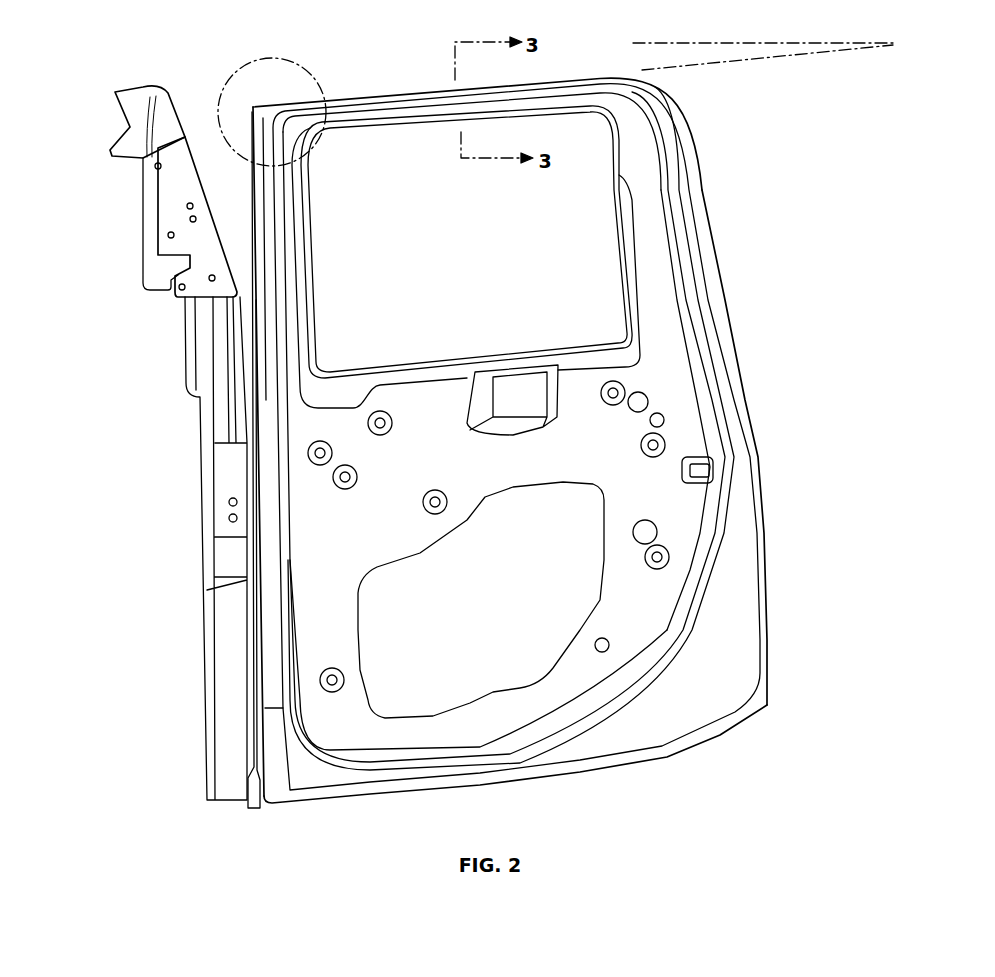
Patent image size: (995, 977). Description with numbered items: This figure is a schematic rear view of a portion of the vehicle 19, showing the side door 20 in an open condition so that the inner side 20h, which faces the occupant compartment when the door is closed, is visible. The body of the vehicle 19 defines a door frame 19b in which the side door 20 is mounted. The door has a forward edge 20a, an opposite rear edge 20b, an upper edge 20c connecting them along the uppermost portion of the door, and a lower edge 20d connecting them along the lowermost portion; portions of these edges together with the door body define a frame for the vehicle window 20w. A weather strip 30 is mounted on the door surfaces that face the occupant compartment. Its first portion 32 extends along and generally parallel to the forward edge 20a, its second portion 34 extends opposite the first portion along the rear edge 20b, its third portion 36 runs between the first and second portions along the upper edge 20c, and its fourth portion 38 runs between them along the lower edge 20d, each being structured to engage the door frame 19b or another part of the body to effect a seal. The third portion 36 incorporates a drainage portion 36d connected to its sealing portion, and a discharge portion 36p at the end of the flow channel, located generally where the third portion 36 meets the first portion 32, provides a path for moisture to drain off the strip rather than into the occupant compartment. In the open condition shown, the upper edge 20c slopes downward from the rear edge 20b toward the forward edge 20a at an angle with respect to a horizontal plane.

The vehicle 19 is at (137, 93).
The door frame 19b is at (180, 160).
The side door 20 is at (742, 354).
The forward edge 20a is at (252, 246).
The rear edge 20b is at (770, 527).
The upper edge 20c is at (537, 82).
The lower edge 20d is at (627, 767).
The inner side 20h is at (680, 392).
The vehicle window 20w is at (567, 243).
The weather strip 30 is at (657, 133).
The first portion 32 is at (277, 302).
The second portion 34 is at (673, 210).
The third portion 36 is at (349, 98).
The drainage portion 36d is at (385, 113).
The discharge portion 36p is at (266, 58).
The fourth portion 38 is at (530, 748).